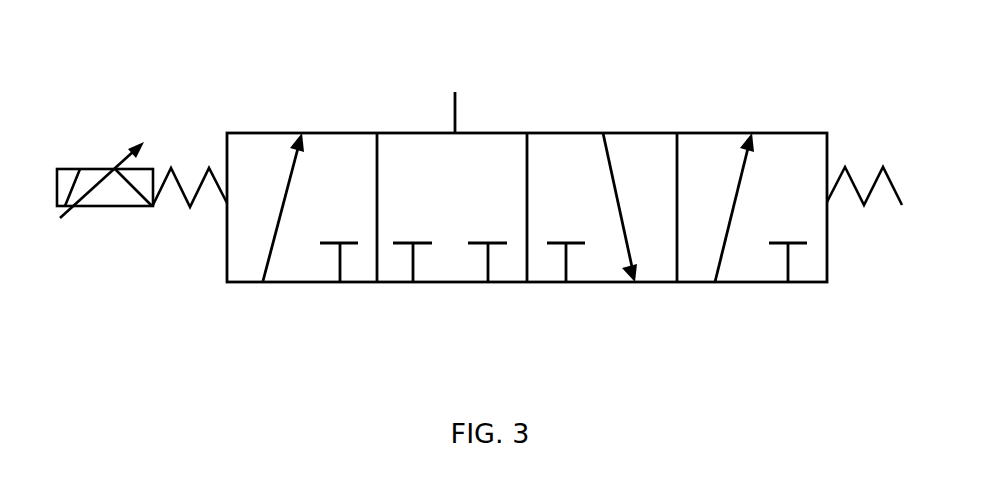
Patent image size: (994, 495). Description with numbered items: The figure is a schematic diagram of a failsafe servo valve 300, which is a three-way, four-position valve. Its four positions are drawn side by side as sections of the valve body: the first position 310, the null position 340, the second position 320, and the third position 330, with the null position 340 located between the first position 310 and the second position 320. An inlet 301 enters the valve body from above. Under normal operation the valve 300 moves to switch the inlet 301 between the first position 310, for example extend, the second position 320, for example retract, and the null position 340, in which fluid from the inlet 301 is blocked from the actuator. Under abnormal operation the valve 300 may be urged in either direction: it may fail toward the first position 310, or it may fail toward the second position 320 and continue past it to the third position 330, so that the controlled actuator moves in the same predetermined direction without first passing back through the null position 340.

The failsafe servo valve 300 is at (88, 58).
The inlet 301 is at (453, 109).
The first position 310 is at (227, 318).
The null position 340 is at (382, 318).
The second position 320 is at (530, 318).
The third position 330 is at (680, 318).